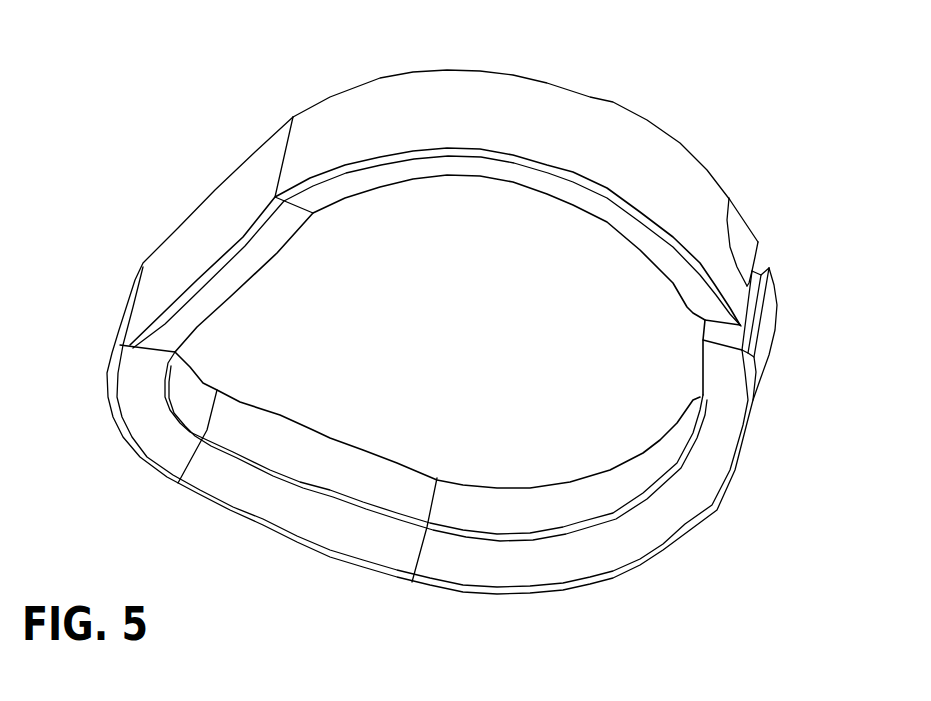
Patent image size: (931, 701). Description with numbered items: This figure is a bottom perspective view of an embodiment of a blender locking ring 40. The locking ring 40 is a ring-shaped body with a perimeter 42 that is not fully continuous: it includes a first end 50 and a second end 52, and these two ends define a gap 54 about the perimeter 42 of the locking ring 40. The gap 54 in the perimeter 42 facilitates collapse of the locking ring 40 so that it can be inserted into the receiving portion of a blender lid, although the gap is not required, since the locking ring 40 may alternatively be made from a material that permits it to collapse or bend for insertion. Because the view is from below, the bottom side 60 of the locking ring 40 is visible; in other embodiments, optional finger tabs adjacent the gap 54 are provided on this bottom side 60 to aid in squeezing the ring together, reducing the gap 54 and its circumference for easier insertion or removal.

The locking ring 40 is at (673, 106).
The perimeter 42 is at (388, 113).
The first end 50 is at (729, 215).
The second end 52 is at (760, 317).
The gap 54 is at (769, 268).
The bottom side 60 is at (682, 495).